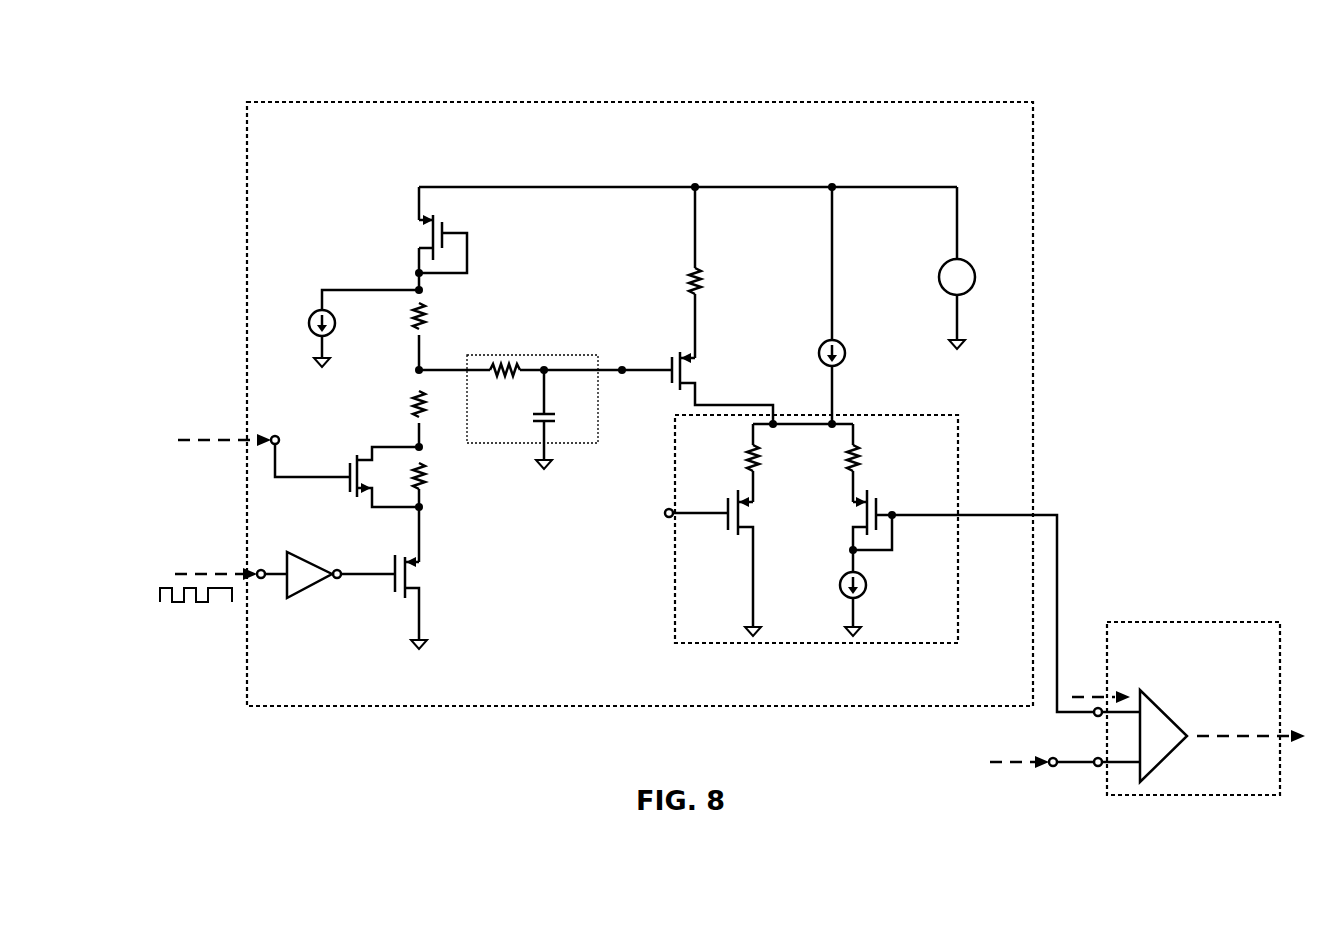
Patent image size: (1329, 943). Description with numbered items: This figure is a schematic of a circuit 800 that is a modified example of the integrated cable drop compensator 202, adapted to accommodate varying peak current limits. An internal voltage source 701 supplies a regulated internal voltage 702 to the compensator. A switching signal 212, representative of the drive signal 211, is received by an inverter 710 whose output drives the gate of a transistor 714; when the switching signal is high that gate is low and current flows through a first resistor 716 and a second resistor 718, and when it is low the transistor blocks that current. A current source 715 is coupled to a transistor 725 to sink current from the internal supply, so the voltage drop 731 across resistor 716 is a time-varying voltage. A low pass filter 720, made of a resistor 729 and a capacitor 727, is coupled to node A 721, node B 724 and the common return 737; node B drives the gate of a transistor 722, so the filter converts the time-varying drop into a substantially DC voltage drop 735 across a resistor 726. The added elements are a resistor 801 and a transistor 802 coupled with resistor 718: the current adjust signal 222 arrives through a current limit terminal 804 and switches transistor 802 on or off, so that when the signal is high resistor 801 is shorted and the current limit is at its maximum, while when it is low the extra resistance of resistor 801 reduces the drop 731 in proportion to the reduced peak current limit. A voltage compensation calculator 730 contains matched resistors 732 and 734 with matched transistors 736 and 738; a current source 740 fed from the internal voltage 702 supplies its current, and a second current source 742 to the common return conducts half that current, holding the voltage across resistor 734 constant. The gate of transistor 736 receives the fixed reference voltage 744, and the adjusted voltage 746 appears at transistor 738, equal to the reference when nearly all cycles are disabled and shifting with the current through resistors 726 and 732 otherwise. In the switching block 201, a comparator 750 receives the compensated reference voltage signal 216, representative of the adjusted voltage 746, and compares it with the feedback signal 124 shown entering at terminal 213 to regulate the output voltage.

The regulator circuit 800 is at (608, 44).
The integrated cable drop compensator 202 is at (614, 150).
The switching block 201 is at (1175, 620).
The transistor T1 725 is at (421, 223).
The current source 715 is at (311, 316).
The voltage drop V_R1 731 is at (468, 316).
The resistor R1 716 is at (412, 329).
The node A 721 is at (414, 372).
The resistor R2 718 is at (425, 417).
The resistor R6 801 is at (427, 492).
The transistor T6 802 is at (371, 460).
The current limit terminal 804 is at (283, 428).
The current adjust signal I_ADJ 222 is at (190, 435).
The transistor T2 714 is at (398, 556).
The inverter 710 is at (308, 598).
The switching signal 212 is at (200, 570).
The low pass filter 720 is at (532, 356).
The resistor 729 is at (497, 379).
The capacitor 727 is at (556, 419).
The common return 737 is at (546, 471).
The node B 724 is at (625, 364).
The transistor T3 722 is at (672, 388).
The resistor R3 726 is at (690, 268).
The voltage drop V_R3 735 is at (735, 274).
The current source 740 is at (850, 346).
The internal voltage source 701 is at (975, 276).
The internal voltage V_INT 702 is at (905, 251).
The voltage compensation calculator 730 is at (675, 643).
The resistor R4 732 is at (745, 453).
The resistor R5 734 is at (865, 458).
The transistor T4 736 is at (728, 534).
The reference voltage V_REF 744 is at (666, 516).
The transistor T5 738 is at (882, 499).
The second current source 742 is at (866, 593).
The adjusted voltage V_ADJ 746 is at (988, 539).
The comparator 750 is at (1158, 698).
The compensated reference voltage signal 216 is at (1080, 692).
The drive signal 211 is at (1232, 725).
The feedback signal 124 is at (990, 760).
The feedback terminal 213 is at (1068, 779).